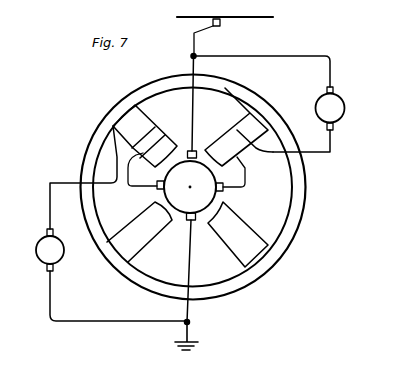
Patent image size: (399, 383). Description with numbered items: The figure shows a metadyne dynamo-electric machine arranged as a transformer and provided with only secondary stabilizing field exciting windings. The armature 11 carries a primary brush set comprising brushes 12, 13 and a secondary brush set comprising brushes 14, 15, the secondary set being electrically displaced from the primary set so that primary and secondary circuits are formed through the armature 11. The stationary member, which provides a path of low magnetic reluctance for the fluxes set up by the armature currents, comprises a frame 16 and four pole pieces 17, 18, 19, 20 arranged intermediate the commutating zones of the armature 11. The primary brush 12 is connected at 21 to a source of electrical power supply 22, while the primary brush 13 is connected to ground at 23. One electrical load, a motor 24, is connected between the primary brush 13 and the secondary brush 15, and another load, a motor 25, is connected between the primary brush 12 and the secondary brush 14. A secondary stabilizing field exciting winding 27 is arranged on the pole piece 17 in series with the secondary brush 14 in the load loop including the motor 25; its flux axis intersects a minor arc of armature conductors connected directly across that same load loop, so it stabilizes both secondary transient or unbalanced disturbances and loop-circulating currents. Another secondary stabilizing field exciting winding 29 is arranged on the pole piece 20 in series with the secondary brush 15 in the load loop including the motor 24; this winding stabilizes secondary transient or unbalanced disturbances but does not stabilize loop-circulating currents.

The armature 11 is at (163, 176).
The primary brush 12 is at (193, 152).
The primary brush 13 is at (193, 223).
The secondary brush 14 is at (222, 185).
The secondary brush 15 is at (155, 190).
The frame 16 is at (287, 226).
The pole piece 17 is at (226, 136).
The pole piece 18 is at (151, 239).
The pole piece 19 is at (251, 229).
The pole piece 20 is at (164, 140).
The connection 21 is at (203, 30).
The source of electrical power supply 22 is at (240, 19).
The ground 23 is at (190, 332).
The motor 24 is at (37, 256).
The motor 25 is at (340, 107).
The secondary stabilizing field exciting winding 27 is at (248, 152).
The secondary stabilizing field exciting winding 29 is at (157, 123).